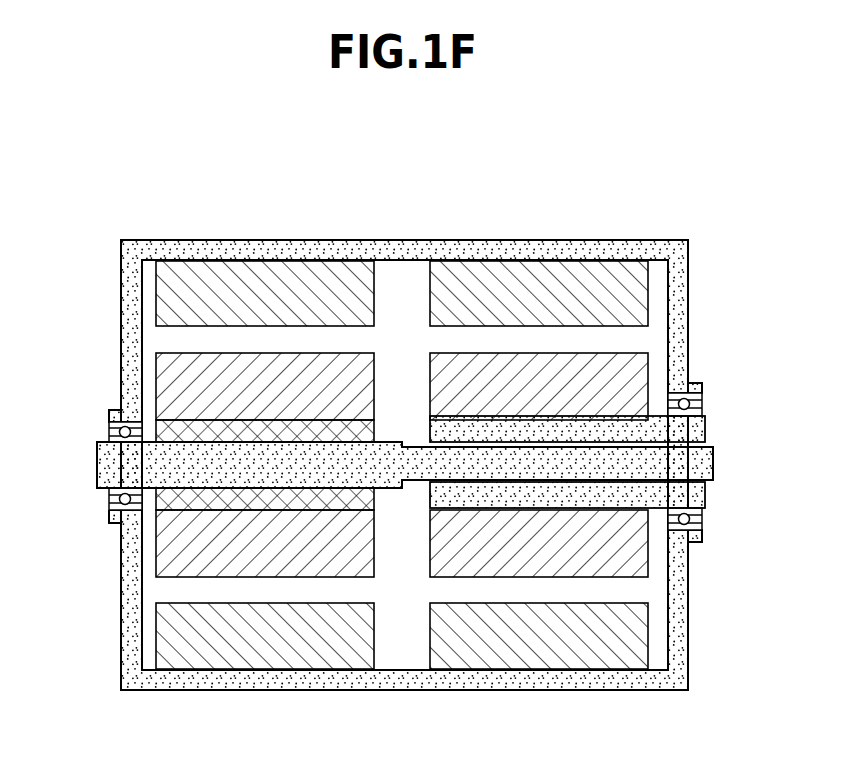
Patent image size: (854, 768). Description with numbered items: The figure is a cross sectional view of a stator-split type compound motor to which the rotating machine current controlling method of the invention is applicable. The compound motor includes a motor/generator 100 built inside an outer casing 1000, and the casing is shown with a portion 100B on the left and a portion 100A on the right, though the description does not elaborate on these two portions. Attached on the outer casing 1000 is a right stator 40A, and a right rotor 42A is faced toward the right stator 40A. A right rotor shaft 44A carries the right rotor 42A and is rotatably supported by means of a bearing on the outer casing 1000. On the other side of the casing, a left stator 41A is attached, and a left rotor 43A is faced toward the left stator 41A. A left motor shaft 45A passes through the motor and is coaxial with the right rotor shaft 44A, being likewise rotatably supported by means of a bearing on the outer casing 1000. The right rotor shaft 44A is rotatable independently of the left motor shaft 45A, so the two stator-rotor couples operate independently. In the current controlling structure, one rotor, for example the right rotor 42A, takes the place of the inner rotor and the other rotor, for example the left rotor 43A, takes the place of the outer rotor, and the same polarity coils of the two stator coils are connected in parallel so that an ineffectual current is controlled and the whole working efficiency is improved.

The motor/generator 100 is at (636, 218).
The outer casing 1000 is at (436, 242).
The first housing portion 100A is at (577, 258).
The second housing portion 100B is at (270, 259).
The right stator 40A is at (649, 285).
The left stator 41A is at (155, 301).
The right rotor 42A is at (649, 367).
The left rotor 43A is at (155, 386).
The right rotor shaft 44A is at (695, 428).
The left motor shaft 45A is at (120, 468).